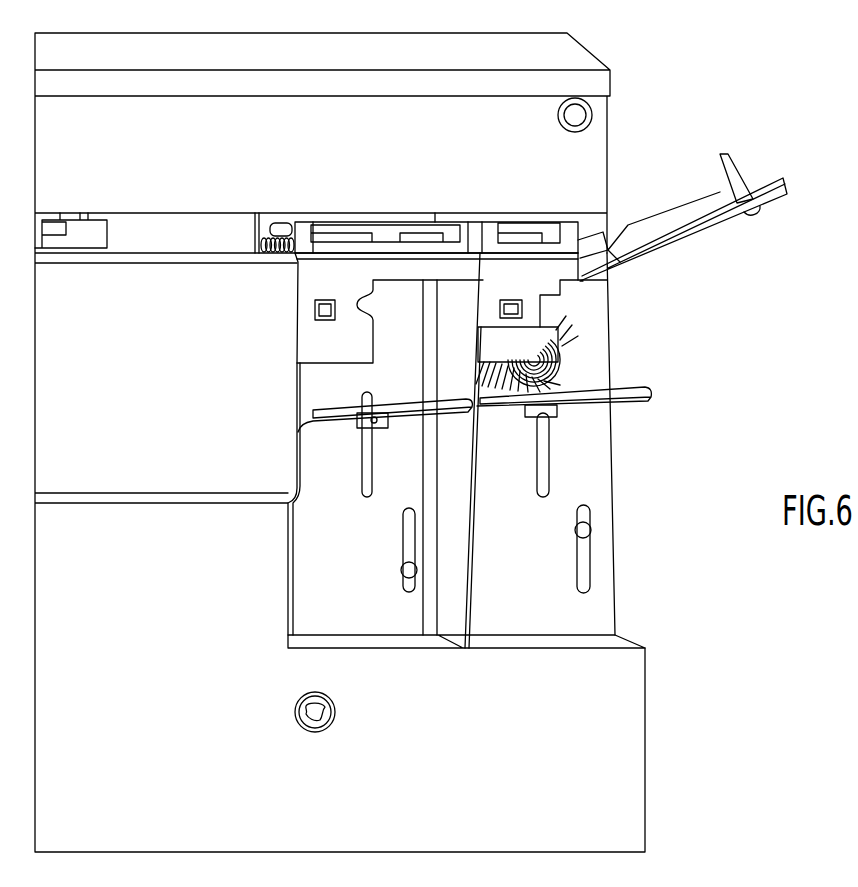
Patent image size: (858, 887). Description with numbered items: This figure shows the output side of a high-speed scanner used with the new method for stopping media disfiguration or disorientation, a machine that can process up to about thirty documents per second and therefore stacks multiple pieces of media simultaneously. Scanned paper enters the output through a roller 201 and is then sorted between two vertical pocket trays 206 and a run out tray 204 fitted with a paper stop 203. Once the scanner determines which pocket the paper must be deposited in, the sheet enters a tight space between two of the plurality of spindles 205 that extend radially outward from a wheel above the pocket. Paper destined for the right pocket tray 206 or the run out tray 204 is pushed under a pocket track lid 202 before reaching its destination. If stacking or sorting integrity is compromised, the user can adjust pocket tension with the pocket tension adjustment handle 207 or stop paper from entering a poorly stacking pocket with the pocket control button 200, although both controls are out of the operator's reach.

The pocket control button 200 is at (303, 308).
The roller 201 is at (257, 240).
The pocket track lid 202 is at (323, 222).
The paper stop 203 is at (740, 173).
The run out tray 204 is at (708, 228).
The spindles 205 is at (572, 343).
The vertical pocket trays 206 is at (622, 399).
The pocket tension adjustment handle 207 is at (592, 530).